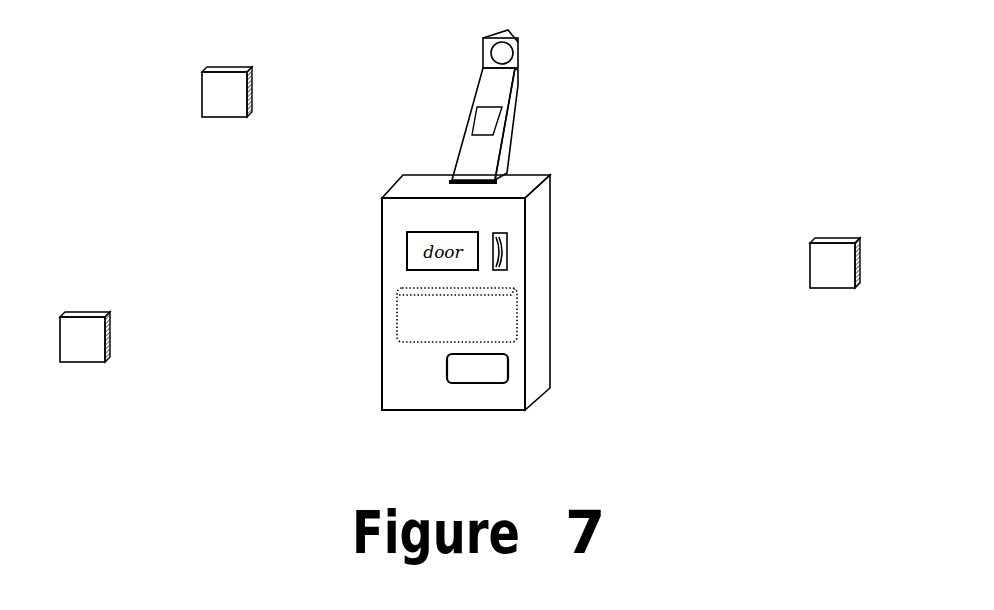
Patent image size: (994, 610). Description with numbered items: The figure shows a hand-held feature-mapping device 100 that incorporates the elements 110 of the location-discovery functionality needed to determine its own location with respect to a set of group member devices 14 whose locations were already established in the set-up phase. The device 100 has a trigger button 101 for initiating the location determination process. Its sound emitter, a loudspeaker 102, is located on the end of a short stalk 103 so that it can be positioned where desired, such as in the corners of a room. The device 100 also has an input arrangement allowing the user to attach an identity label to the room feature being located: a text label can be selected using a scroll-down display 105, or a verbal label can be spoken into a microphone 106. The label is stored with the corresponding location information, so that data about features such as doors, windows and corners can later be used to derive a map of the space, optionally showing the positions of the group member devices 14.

The group member device 14 is at (220, 88).
The hand-held feature-mapping device 100 is at (380, 250).
The trigger button 101 is at (498, 368).
The sound emitter (loudspeaker) 102 is at (513, 140).
The short stalk 103 is at (498, 53).
The scroll-down display 105 is at (501, 218).
The microphone 106 is at (482, 123).
The elements of the location-discovery functionality 110 is at (400, 313).